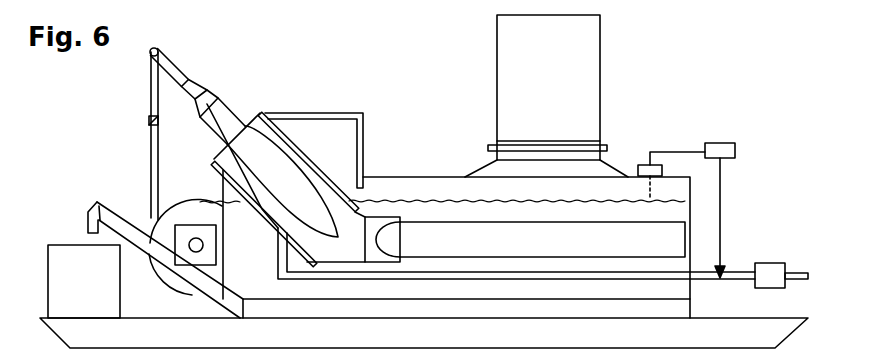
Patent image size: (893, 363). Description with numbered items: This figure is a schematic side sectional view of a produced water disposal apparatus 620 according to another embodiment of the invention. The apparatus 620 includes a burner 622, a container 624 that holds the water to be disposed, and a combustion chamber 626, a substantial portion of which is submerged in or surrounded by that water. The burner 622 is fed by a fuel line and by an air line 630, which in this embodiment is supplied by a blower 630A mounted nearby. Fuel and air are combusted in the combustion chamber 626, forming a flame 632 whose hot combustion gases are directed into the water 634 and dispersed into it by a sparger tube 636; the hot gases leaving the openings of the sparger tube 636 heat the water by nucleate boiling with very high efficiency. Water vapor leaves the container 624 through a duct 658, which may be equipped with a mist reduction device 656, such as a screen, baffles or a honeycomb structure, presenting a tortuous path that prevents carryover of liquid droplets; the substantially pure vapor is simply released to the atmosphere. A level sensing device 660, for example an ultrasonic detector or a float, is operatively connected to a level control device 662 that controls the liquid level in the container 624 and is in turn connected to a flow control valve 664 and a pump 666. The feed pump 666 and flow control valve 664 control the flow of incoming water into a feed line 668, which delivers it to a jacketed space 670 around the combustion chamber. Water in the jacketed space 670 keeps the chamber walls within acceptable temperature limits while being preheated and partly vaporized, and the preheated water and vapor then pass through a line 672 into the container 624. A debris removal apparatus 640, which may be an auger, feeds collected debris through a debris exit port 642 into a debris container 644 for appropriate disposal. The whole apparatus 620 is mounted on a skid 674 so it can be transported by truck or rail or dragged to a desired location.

The produced water disposal apparatus 620 is at (315, 38).
The burner 622 is at (262, 210).
The container 624 is at (383, 177).
The combustion chamber 626 is at (256, 130).
The air line 630 is at (158, 50).
The blower 630A is at (217, 220).
The flame 632 is at (297, 189).
The water 634 is at (409, 212).
The sparger tube 636 is at (545, 250).
The debris removal apparatus 640 is at (408, 318).
The debris exit port 642 is at (96, 205).
The debris container 644 is at (100, 291).
The mist reduction device 656 is at (598, 146).
The duct 658 is at (565, 88).
The level sensing device 660 is at (643, 165).
The level control device 662 is at (718, 143).
The flow control valve 664 is at (723, 268).
The pump 666 is at (770, 265).
The feed line 668 is at (697, 280).
The jacketed space 670 is at (212, 162).
The line 672 is at (276, 113).
The skid 674 is at (447, 342).